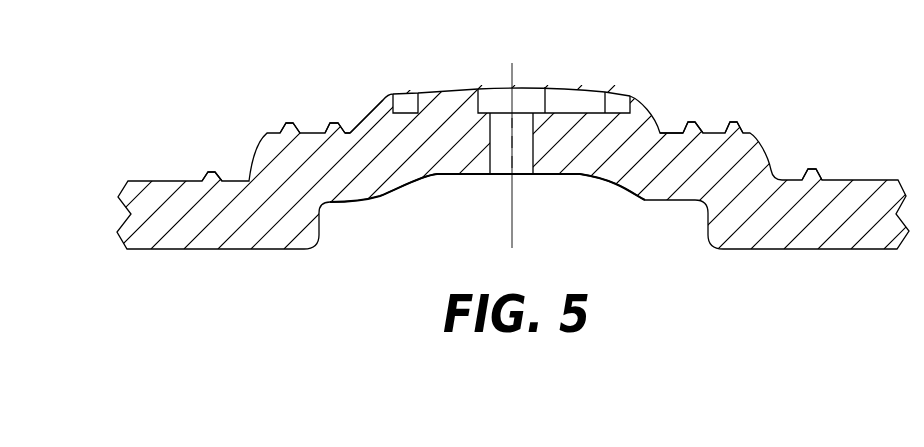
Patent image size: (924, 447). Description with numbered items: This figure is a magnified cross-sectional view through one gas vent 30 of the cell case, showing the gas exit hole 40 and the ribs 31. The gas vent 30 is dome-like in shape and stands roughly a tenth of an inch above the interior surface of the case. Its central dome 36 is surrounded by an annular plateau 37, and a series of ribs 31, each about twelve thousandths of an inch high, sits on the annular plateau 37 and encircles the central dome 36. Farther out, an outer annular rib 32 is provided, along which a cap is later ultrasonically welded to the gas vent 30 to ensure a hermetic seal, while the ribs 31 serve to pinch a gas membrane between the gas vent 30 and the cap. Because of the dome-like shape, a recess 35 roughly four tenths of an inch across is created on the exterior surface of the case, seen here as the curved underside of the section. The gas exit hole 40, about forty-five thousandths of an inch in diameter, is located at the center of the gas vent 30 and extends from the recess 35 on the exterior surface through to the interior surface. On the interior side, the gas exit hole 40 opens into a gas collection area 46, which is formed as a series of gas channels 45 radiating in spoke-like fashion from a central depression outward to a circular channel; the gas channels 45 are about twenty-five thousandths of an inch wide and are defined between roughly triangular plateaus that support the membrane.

The gas vent 30 is at (97, 218).
The ribs 31 is at (336, 121).
The outer annular rib 32 is at (212, 171).
The recess 35 is at (452, 176).
The central dome 36 is at (382, 100).
The annular plateau 37 is at (351, 133).
The gas exit hole 40 is at (523, 163).
The gas channels 45 is at (577, 98).
The gas collection area 46 is at (404, 103).